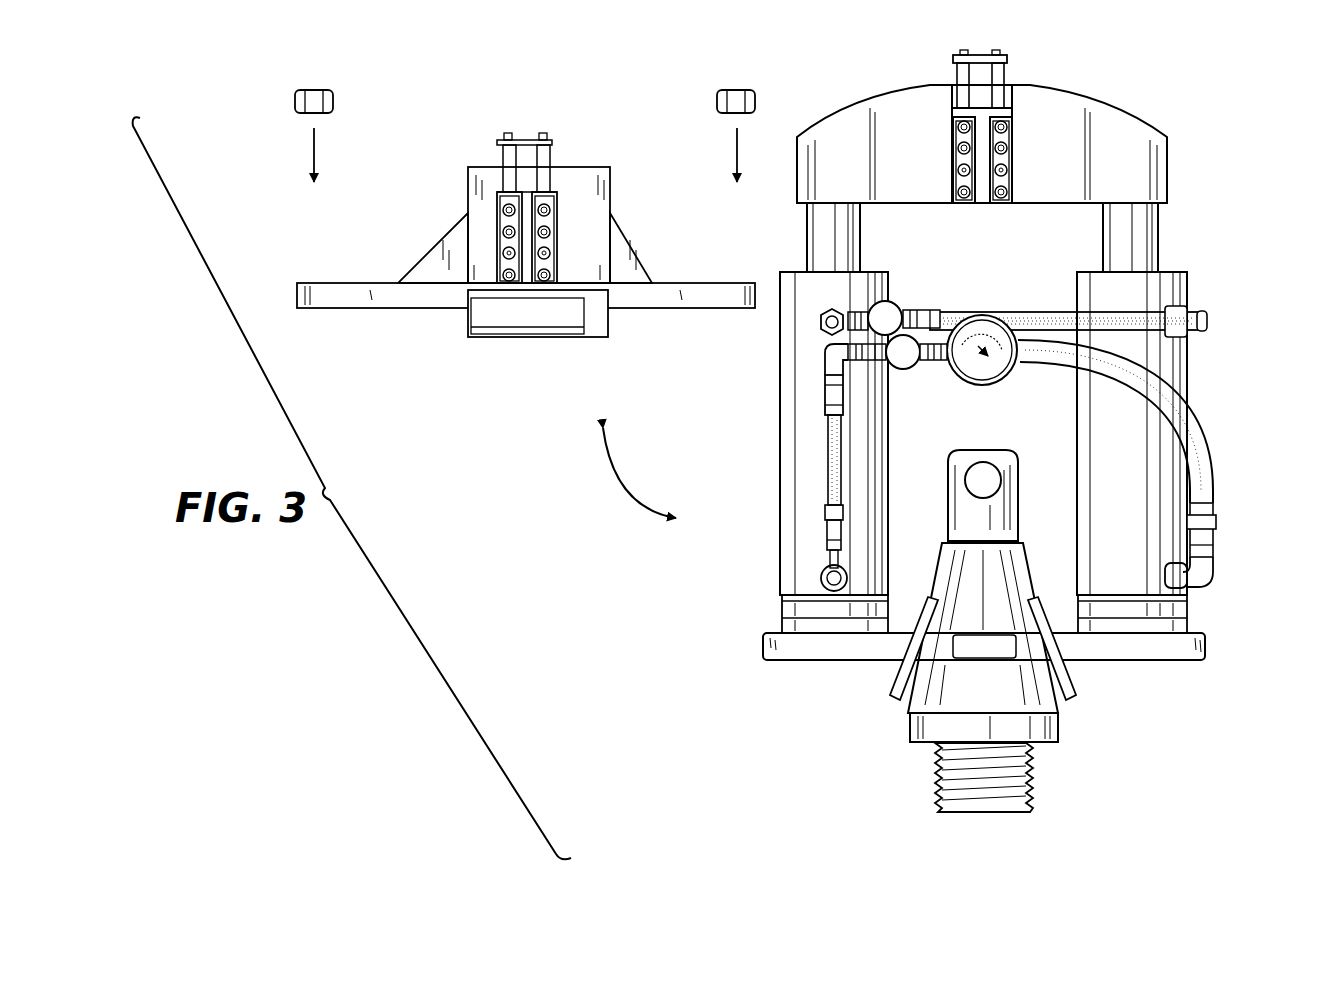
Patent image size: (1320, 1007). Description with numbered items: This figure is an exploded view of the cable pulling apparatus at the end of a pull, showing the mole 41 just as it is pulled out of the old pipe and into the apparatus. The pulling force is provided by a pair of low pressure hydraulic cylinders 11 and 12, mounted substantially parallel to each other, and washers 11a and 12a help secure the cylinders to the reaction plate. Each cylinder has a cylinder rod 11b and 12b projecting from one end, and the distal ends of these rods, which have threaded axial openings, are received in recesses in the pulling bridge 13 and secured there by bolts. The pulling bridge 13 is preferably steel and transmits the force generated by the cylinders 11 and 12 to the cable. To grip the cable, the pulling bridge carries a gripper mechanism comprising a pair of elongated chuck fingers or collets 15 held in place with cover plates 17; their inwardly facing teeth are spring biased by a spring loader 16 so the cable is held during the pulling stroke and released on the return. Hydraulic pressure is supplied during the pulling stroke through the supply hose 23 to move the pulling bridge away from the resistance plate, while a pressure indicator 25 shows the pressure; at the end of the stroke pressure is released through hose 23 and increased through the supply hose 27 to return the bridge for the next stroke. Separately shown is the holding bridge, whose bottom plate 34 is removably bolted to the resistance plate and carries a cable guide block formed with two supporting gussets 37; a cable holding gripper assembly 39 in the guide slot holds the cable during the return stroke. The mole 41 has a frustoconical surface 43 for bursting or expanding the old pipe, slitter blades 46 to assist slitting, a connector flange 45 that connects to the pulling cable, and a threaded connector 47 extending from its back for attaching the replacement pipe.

The hydraulic cylinder 11 is at (1160, 388).
The washer 11a is at (1205, 638).
The cylinder rod 11b is at (1160, 238).
The hydraulic cylinder 12 is at (780, 452).
The washer 12a is at (775, 631).
The cylinder rod 12b is at (862, 252).
The pulling bridge 13 is at (903, 86).
The chuck fingers 15 is at (975, 112).
The spring loader 16 is at (997, 76).
The cover plates 17 is at (969, 162).
The supply hose 23 is at (1185, 436).
The pressure indicator 25 is at (975, 315).
The supply hose 27 is at (1127, 320).
The bottom plate 34 is at (360, 306).
The supporting gussets 37 is at (415, 262).
The cable holding gripper assembly 39 is at (548, 196).
The mole 41 is at (904, 706).
The frustoconical surface 43 is at (1033, 673).
The connector flange 45 is at (1018, 503).
The slitter blades 46 is at (890, 673).
The threaded connector 47 is at (1025, 774).